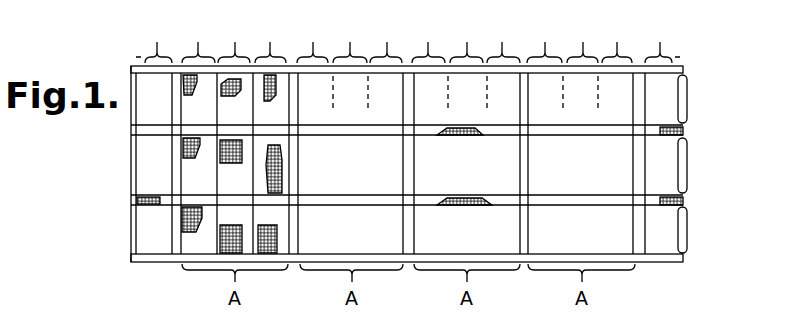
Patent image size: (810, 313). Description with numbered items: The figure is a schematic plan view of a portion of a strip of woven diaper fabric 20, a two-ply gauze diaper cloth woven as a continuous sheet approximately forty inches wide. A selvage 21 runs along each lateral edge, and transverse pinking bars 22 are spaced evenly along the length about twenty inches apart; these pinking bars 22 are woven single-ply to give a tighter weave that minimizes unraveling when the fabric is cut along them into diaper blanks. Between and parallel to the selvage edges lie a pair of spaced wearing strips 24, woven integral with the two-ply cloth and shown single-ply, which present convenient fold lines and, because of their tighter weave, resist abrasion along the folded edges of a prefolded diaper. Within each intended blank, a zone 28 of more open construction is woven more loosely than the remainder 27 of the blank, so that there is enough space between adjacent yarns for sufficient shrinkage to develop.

The fabric 20 is at (667, 100).
The selvage 21 is at (683, 70).
The pinking bars 22 is at (173, 225).
The wearing strips 24 is at (128, 130).
The remainder of the diaper blank 27 is at (408, 136).
The zone of more open construction 28 is at (408, 64).